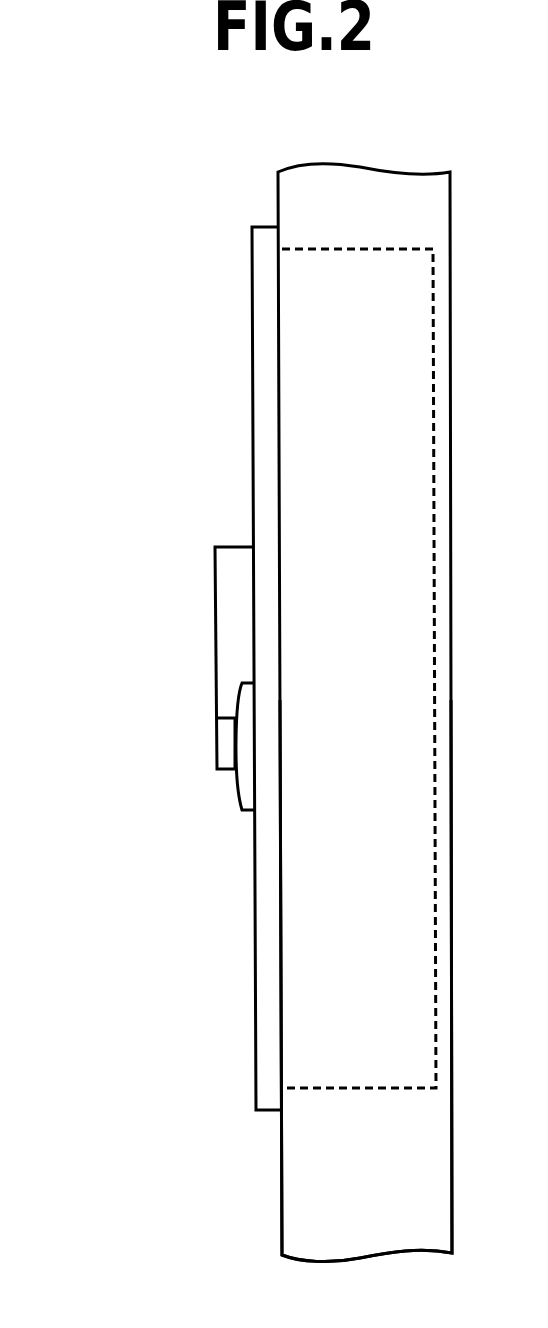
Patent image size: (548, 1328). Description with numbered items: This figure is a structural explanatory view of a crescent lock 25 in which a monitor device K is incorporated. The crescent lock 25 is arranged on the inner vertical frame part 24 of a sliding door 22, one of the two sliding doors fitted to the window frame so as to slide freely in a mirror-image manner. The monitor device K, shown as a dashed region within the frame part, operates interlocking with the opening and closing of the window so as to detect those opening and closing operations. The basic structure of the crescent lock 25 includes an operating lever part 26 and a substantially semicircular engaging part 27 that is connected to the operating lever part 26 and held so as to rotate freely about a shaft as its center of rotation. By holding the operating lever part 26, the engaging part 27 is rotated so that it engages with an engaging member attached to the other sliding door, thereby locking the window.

The sliding door 22 is at (282, 1180).
The inner vertical frame part 24 is at (305, 203).
The monitor device K is at (340, 463).
The crescent lock 25 is at (220, 740).
The operating lever part 26 is at (230, 588).
The engaging part 27 is at (250, 783).